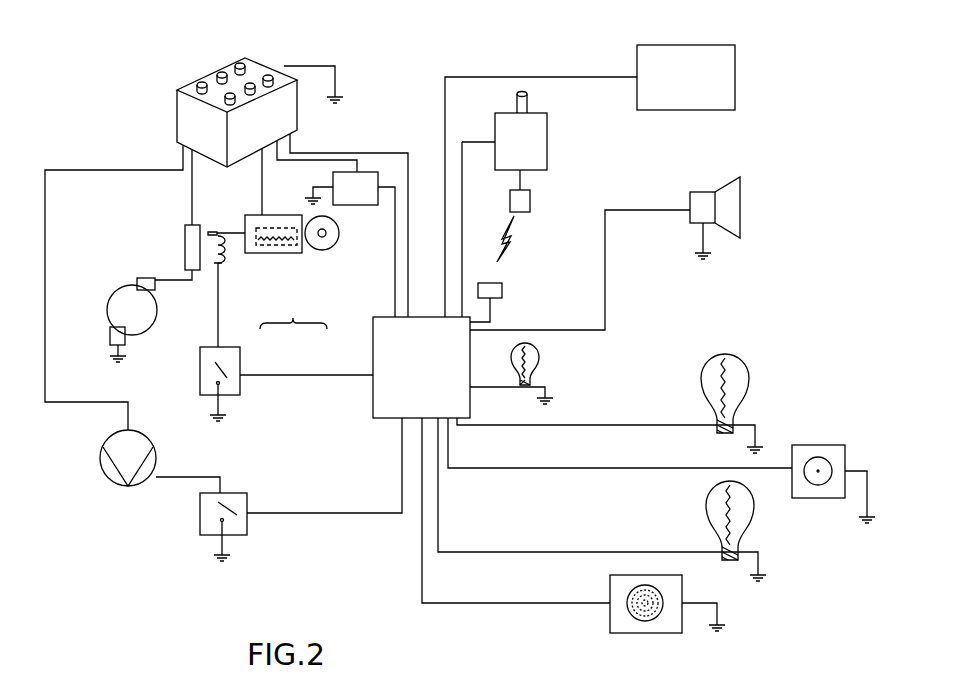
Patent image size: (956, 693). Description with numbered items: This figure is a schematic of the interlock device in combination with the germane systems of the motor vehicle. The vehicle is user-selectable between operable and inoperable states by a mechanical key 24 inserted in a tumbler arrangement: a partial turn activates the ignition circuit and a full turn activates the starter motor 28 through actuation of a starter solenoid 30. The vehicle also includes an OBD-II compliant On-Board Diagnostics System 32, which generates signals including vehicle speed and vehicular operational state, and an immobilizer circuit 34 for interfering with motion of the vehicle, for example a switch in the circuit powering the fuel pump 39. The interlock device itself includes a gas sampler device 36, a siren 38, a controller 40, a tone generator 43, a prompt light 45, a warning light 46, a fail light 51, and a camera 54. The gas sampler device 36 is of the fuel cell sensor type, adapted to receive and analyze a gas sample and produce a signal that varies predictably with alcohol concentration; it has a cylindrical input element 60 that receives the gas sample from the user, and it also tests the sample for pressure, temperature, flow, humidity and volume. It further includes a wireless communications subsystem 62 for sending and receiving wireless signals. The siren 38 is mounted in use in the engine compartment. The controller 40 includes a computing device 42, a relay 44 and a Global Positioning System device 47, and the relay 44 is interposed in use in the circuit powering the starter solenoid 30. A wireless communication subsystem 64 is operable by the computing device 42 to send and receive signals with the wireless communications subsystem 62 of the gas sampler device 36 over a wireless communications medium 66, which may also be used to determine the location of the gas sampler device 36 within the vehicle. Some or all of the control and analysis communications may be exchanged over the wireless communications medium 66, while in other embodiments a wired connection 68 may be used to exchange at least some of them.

The mechanical key 24 is at (327, 245).
The starter motor 28 is at (100, 297).
The starter solenoid 30 is at (182, 240).
The On-Board Diagnostics System 32 is at (630, 57).
The immobilizer circuit 34 is at (250, 495).
The gas sampler device 36 is at (553, 134).
The siren 38 is at (697, 175).
The fuel pump 39 is at (95, 455).
The controller 40 is at (293, 313).
The computing device 42 is at (372, 350).
The tone generator 43 is at (605, 580).
The relay 44 is at (247, 364).
The prompt light 45 is at (700, 352).
The warning light 46 is at (701, 500).
The Global Positioning System device 47 is at (358, 214).
The fail light 51 is at (548, 357).
The camera 54 is at (800, 445).
The input element 60 is at (530, 102).
The wireless communications subsystem 62 is at (532, 199).
The wireless communication subsystem 64 is at (504, 288).
The wireless communications medium 66 is at (518, 247).
The wired connection 68 is at (463, 220).